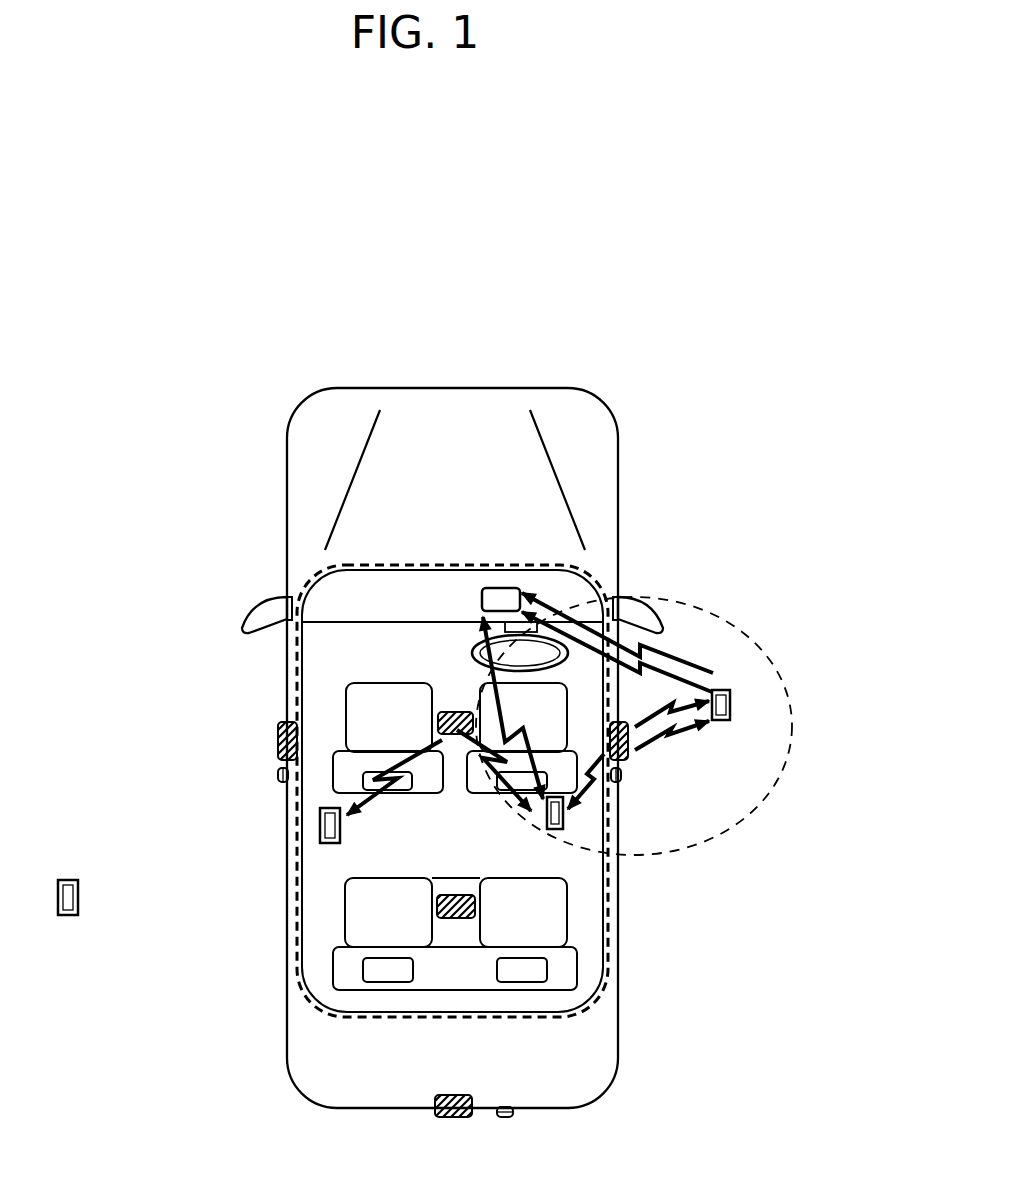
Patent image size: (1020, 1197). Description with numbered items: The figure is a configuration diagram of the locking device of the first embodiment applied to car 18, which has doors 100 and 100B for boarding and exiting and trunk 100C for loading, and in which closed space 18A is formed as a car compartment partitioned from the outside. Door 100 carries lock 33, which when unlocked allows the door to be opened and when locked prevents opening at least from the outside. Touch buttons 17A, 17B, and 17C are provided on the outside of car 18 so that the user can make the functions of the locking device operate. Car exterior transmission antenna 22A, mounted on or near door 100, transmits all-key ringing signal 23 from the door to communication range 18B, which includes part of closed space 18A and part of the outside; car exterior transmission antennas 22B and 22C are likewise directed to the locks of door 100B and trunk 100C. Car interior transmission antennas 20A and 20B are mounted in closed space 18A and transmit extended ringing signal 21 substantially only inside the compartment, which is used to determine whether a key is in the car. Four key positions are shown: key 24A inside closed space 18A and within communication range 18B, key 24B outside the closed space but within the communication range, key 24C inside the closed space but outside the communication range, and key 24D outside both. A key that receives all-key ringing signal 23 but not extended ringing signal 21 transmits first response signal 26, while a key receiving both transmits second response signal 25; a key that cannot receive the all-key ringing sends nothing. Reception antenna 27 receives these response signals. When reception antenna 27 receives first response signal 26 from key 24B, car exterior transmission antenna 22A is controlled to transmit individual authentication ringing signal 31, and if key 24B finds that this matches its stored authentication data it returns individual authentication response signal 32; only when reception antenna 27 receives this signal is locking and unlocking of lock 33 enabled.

The car 18 is at (610, 415).
The closed space 18A is at (598, 586).
The communication range 18B is at (698, 610).
The reception antenna 27 is at (500, 588).
The car interior transmission antenna 20A is at (438, 720).
The car interior transmission antenna 20B is at (437, 907).
The extended ringing signal 21 is at (373, 798).
The car exterior transmission antenna 22A is at (625, 742).
The car exterior transmission antenna 22B is at (278, 740).
The car exterior transmission antenna 22C is at (450, 1117).
The touch button 17A is at (626, 782).
The touch button 17B is at (278, 776).
The touch button 17C is at (513, 1117).
The all-key ringing signal 23 is at (688, 730).
The key 24A is at (565, 830).
The key 24B is at (731, 702).
The key 24C is at (320, 820).
The key 24D is at (68, 880).
The second response signal 25 is at (502, 710).
The first response signal 26 is at (712, 680).
The individual authentication ringing signal 31 is at (707, 733).
The individual authentication response signal 32 is at (714, 675).
The lock 33 is at (615, 795).
The door 100 is at (610, 692).
The door 100B is at (297, 670).
The trunk 100C is at (353, 1110).